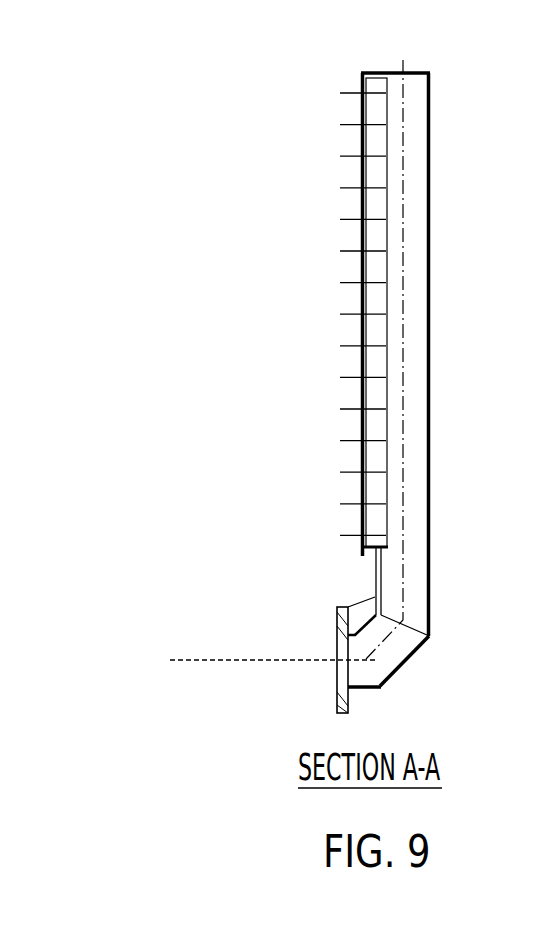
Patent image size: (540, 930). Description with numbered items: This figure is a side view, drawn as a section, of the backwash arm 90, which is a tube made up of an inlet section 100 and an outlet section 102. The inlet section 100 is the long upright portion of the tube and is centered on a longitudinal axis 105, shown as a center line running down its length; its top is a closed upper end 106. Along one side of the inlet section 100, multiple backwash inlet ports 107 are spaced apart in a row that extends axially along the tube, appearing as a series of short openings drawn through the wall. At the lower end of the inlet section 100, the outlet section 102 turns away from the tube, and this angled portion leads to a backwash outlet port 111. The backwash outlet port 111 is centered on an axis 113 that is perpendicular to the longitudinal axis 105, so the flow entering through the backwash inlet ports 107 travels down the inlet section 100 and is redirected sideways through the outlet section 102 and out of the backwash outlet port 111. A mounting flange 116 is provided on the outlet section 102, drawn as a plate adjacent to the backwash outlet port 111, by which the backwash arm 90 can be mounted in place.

The backwash arm 90 is at (289, 97).
The inlet section 100 is at (428, 392).
The outlet section 102 is at (403, 663).
The longitudinal axis 105 is at (403, 297).
The closed upper end 106 is at (383, 73).
The backwash inlet ports 107 is at (361, 220).
The backwash outlet port 111 is at (375, 680).
The axis 113 is at (212, 660).
The mounting flange 116 is at (343, 607).